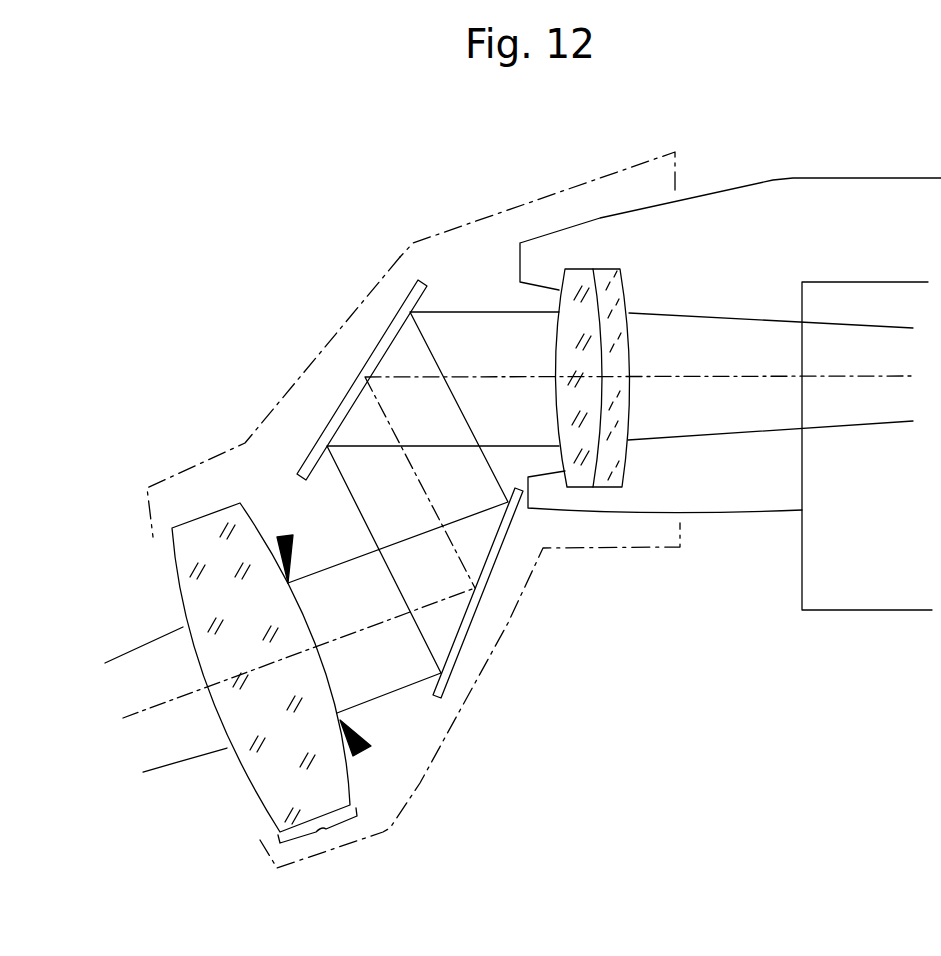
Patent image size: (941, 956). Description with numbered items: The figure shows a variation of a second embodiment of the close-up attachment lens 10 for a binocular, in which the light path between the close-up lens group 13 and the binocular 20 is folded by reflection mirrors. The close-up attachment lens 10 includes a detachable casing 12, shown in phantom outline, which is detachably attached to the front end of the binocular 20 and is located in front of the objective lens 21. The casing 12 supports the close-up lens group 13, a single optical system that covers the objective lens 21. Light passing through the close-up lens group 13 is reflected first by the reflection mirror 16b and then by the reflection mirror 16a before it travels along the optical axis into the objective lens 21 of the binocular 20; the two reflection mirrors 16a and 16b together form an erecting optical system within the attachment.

The close-up attachment lens 10 is at (468, 209).
The detachable casing 12 is at (352, 315).
The close-up lens group 13 is at (322, 837).
The reflection mirror 16a is at (338, 410).
The reflection mirror 16b is at (467, 620).
The binocular 20 is at (862, 178).
The objective lens 21 is at (622, 288).